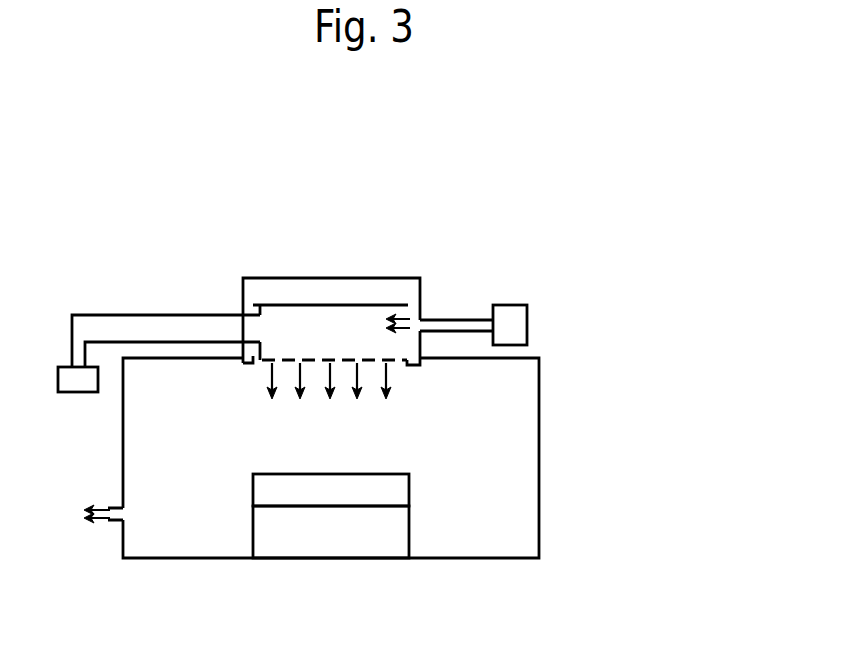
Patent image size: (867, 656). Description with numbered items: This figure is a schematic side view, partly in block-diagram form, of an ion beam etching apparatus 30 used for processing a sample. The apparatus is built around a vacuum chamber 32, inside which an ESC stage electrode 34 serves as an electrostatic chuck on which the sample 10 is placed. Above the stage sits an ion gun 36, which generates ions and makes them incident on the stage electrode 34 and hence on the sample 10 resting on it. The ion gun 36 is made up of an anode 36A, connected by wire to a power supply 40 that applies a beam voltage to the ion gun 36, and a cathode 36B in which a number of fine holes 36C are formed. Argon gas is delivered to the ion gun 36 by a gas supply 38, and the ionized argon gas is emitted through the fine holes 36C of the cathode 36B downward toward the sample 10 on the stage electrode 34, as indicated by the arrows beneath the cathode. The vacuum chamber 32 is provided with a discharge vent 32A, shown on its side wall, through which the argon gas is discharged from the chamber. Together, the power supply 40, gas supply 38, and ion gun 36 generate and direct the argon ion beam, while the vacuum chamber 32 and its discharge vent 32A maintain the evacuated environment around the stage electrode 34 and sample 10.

The ion beam etching apparatus 30 is at (369, 162).
The vacuum chamber 32 is at (541, 432).
The discharge vent 32A is at (108, 508).
The sample 10 is at (366, 473).
The ESC stage electrode 34 is at (411, 528).
The ion gun 36 is at (405, 278).
The anode 36A is at (298, 304).
The cathode 36B is at (388, 362).
The fine holes 36C is at (328, 360).
The gas supply 38 is at (518, 305).
The power supply 40 is at (62, 367).